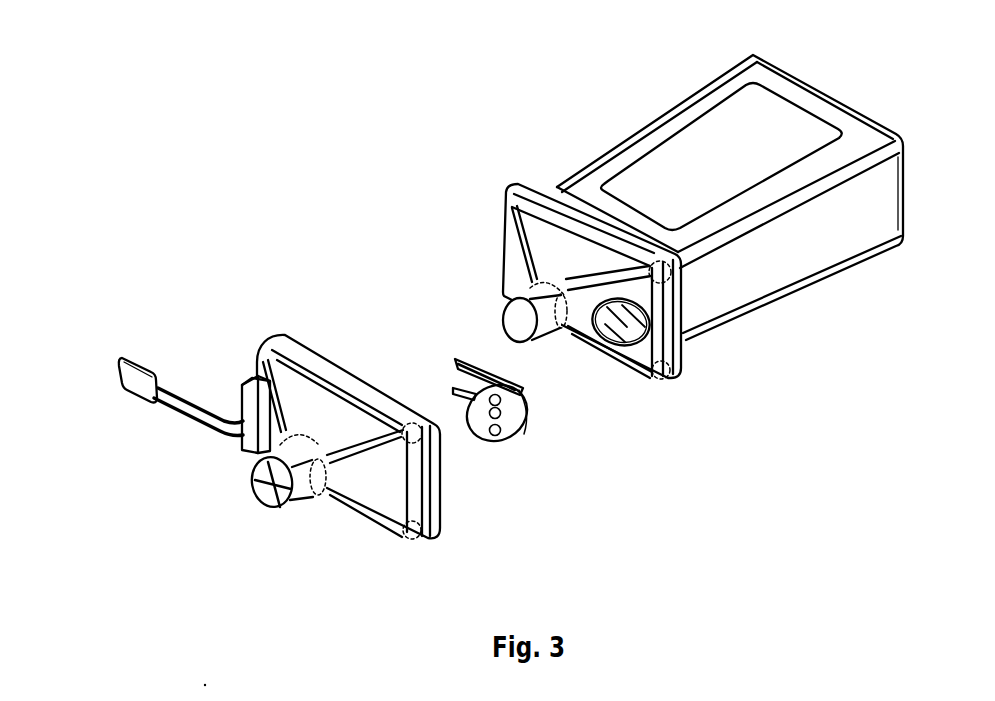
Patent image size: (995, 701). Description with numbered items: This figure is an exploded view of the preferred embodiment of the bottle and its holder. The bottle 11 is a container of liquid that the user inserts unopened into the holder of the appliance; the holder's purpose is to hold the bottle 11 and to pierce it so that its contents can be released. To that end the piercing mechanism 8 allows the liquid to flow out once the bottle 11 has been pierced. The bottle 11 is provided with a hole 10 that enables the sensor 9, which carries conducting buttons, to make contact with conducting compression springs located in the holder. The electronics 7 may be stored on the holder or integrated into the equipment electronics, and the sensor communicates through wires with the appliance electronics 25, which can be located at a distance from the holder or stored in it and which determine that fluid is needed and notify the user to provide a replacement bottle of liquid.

The electronics 7 is at (243, 373).
The piercing mechanism 8 is at (287, 507).
The sensor 9 is at (517, 442).
The hole 10 is at (627, 347).
The bottle 11 is at (713, 330).
The appliance electronics 25 is at (122, 392).